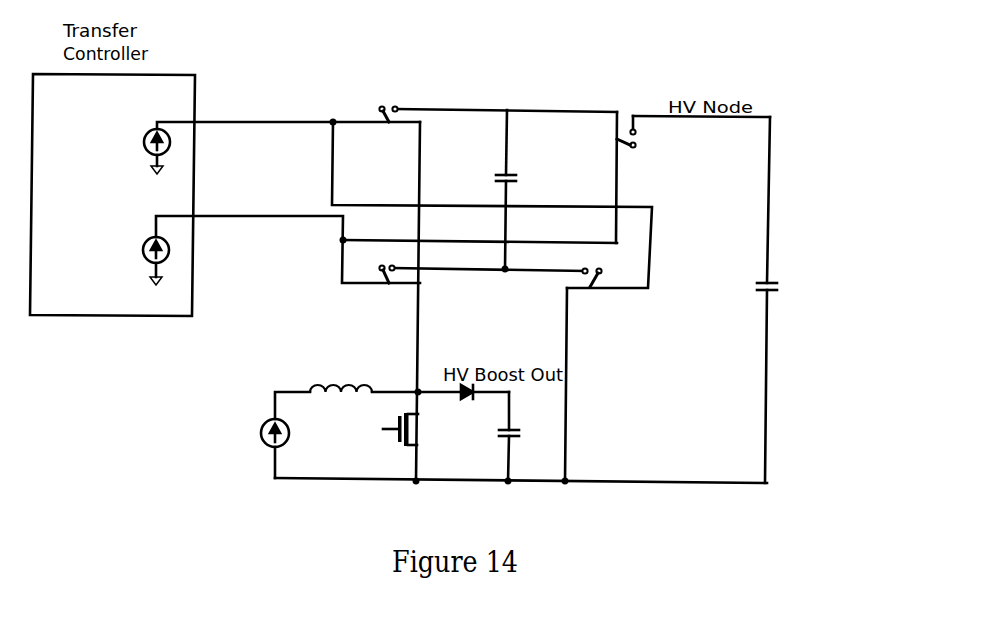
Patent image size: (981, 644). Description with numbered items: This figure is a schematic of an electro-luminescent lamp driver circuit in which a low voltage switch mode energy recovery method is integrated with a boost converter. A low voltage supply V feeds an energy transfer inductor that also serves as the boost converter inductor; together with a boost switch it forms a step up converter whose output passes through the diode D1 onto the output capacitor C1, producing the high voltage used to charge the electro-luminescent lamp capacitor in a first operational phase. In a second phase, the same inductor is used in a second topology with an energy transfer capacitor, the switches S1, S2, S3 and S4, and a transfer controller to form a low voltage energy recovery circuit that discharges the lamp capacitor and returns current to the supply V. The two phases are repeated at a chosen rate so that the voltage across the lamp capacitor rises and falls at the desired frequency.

The switch S1 is at (643, 134).
The switch S2 is at (392, 290).
The switch S3 is at (386, 133).
The switch S4 is at (596, 295).
The capacitor C1 is at (525, 437).
The diode D1 is at (472, 407).
The low voltage supply V is at (210, 422).